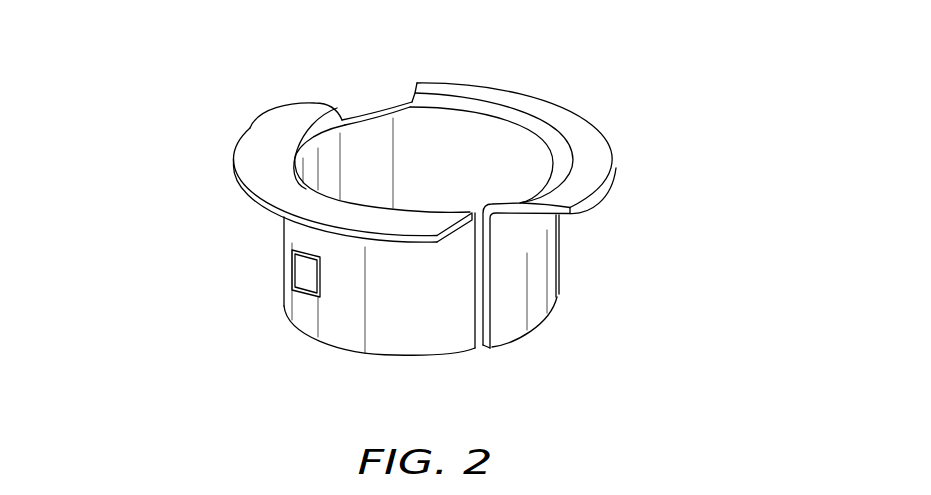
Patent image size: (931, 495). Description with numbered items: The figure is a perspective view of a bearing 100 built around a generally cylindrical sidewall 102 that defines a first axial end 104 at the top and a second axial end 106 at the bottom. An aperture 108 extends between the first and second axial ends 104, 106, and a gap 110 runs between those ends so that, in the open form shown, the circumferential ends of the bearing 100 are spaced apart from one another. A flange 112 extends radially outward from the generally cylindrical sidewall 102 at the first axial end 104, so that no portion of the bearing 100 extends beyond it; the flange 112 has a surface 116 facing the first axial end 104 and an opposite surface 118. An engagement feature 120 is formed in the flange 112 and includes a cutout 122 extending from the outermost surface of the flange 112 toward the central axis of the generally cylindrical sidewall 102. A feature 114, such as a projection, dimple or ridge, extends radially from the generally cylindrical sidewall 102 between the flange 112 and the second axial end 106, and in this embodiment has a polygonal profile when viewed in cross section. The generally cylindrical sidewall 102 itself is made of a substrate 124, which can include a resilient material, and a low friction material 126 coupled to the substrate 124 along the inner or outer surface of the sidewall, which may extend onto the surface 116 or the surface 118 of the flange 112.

The bearing 100 is at (158, 63).
The generally cylindrical sidewall 102 is at (303, 337).
The first axial end 104 is at (310, 102).
The second axial end 106 is at (387, 353).
The aperture 108 is at (444, 157).
The gap 110 is at (480, 352).
The flange 112 is at (602, 175).
The feature 114 is at (295, 272).
The surface 116 is at (570, 117).
The surface 118 is at (580, 213).
The engagement feature 120 is at (375, 108).
The cutout 122 is at (412, 92).
The substrate 124 is at (552, 268).
The low friction material 126 is at (243, 163).